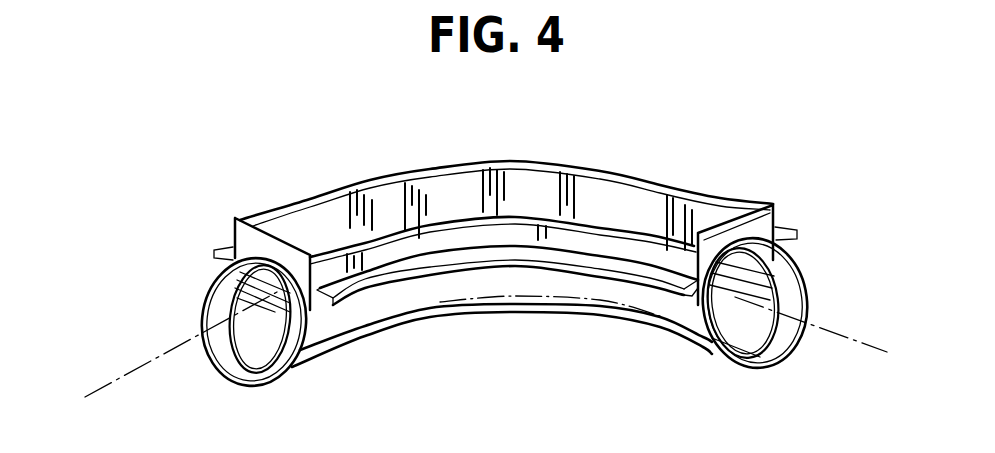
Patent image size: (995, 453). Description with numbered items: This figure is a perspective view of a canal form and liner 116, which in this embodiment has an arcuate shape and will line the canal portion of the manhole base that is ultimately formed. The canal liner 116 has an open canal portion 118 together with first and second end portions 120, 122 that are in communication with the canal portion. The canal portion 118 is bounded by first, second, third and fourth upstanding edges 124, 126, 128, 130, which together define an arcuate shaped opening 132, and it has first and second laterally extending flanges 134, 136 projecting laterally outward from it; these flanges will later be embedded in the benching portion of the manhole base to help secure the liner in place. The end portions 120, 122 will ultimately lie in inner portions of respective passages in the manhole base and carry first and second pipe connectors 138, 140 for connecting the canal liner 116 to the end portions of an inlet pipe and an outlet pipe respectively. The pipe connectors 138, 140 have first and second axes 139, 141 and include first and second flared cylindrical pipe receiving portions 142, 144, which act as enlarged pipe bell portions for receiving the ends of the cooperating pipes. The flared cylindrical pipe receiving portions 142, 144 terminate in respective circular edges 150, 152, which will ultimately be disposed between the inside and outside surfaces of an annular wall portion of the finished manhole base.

The canal form and liner 116 is at (600, 170).
The open canal portion 118 is at (533, 176).
The first end portion 120 is at (297, 368).
The second end portion 122 is at (715, 350).
The first upstanding edge 124 is at (268, 212).
The second upstanding edge 126 is at (235, 218).
The third upstanding edge 128 is at (772, 203).
The fourth upstanding edge 130 is at (647, 230).
The arcuate shaped opening 132 is at (438, 196).
The first laterally extending flange 134 is at (600, 278).
The second laterally extending flange 136 is at (227, 249).
The first pipe connector 138 is at (252, 375).
The first axis 139 is at (860, 348).
The second pipe connector 140 is at (768, 357).
The second axis 141 is at (128, 373).
The first flared cylindrical pipe receiving portion 142 is at (222, 358).
The second flared cylindrical pipe receiving portion 144 is at (807, 297).
The circular edge 150 is at (206, 292).
The circular edge 152 is at (803, 267).